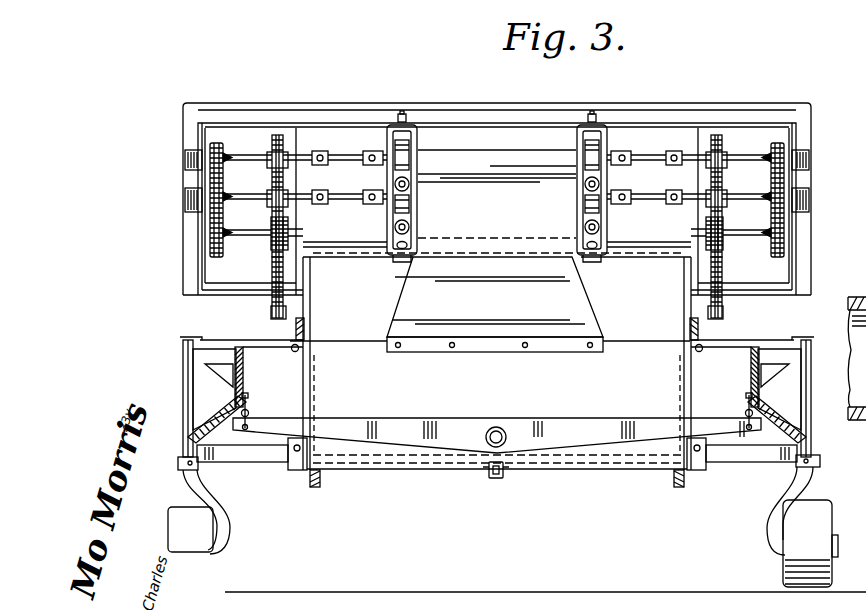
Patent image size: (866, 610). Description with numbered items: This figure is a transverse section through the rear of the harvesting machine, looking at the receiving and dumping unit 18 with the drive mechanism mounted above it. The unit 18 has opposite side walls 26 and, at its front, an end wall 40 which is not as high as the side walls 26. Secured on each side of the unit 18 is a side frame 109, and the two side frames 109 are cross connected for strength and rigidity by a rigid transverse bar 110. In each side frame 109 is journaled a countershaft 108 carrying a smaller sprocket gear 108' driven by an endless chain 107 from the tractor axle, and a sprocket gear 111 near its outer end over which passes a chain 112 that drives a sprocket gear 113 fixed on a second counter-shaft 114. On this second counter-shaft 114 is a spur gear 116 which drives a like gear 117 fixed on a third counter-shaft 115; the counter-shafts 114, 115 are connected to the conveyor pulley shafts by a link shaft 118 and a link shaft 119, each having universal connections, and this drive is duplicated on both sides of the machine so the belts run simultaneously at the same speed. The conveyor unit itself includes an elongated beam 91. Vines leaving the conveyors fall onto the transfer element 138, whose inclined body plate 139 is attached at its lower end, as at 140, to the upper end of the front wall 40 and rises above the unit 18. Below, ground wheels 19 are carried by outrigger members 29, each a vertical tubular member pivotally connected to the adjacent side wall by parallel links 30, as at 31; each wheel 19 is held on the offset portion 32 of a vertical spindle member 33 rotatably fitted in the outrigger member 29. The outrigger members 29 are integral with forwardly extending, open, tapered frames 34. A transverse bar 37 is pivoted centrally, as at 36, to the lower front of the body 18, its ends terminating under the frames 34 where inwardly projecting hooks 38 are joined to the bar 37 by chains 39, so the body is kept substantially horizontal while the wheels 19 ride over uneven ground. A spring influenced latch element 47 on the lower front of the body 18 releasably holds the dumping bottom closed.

The transverse bar 110 is at (443, 104).
The side frame 109 is at (182, 137).
The sprocket gear 113 is at (216, 143).
The second counter-shaft 114 is at (240, 151).
The third counter-shaft 115 is at (240, 191).
The spur gear 116 is at (285, 150).
The link shaft 118 is at (351, 151).
The link shaft 119 is at (341, 191).
The spur gear 117 is at (299, 217).
The chain 112 is at (209, 213).
The sprocket gear 111 is at (209, 242).
The countershaft 108 is at (497, 247).
The sprocket gear 108' is at (494, 226).
The transfer element 138 is at (497, 201).
The inclined body plate 139 is at (420, 292).
The attachment of plate to front wall 140 is at (474, 353).
The side walls 26 is at (308, 276).
The endless chain 107 is at (284, 310).
The elongated beam 91 is at (858, 297).
The forwardly extending frame 34 is at (211, 350).
The parallel links 30 is at (252, 346).
The outrigger member 29 is at (182, 372).
The pivot connection 31 is at (300, 349).
The end wall 40 is at (620, 340).
The receiving and dumping unit 18 is at (497, 417).
The hook 38 is at (248, 396).
The chain 39 is at (250, 413).
The central pivot 36 is at (504, 431).
The transverse bar 37 is at (590, 420).
The vertical spindle member 33 is at (200, 475).
The offset portion 32 is at (222, 523).
The latch element 47 is at (498, 479).
The ground wheel 19 is at (190, 546).